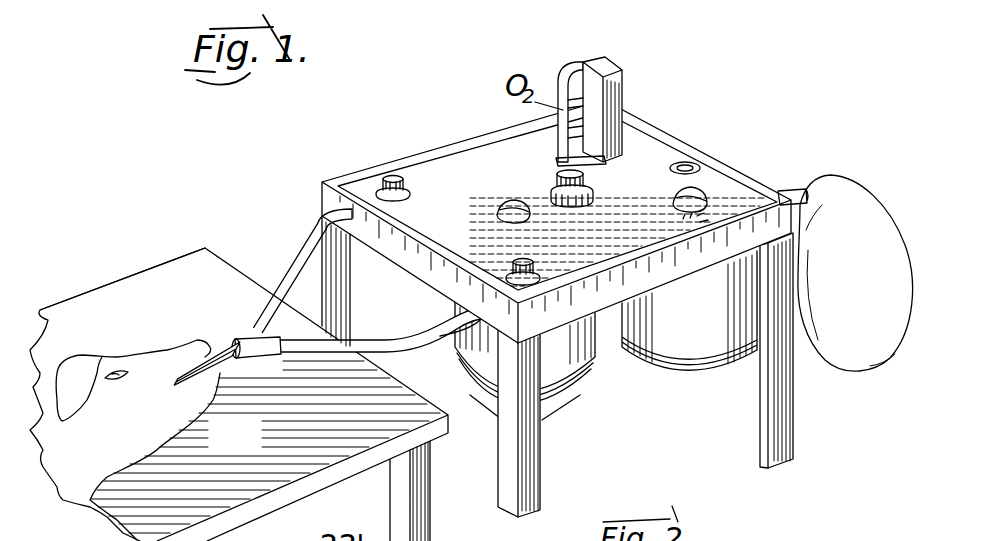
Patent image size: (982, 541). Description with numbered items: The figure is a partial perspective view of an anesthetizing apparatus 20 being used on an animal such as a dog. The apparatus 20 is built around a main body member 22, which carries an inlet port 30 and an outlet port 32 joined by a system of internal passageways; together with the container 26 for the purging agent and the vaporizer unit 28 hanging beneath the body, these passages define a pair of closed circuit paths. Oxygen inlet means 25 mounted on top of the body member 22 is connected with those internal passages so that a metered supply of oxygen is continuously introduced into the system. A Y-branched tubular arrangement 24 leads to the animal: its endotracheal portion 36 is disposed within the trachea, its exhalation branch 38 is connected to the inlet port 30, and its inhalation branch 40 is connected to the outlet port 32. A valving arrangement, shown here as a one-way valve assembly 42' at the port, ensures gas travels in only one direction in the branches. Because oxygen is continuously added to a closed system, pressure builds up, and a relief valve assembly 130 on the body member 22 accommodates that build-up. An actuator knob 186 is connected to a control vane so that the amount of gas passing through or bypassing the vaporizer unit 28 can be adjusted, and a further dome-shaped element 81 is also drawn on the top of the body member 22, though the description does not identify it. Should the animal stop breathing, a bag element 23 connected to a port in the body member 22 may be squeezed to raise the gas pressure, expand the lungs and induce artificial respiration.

The anesthetizing apparatus 20 is at (541, 262).
The main body member 22 is at (472, 147).
The bag element 23 is at (857, 210).
The Y-branched tubular arrangement 24 is at (307, 357).
The oxygen inlet means 25 is at (669, 106).
The container for the purging agent 26 is at (573, 368).
The vaporizer unit 28 is at (712, 365).
The inlet port 30 is at (322, 206).
The outlet port 32 is at (457, 305).
The endotracheal portion 36 is at (222, 343).
The exhalation branch 38 is at (300, 255).
The inhalation branch 40 is at (400, 343).
The one-way valve assembly 42' is at (512, 253).
The valve dome 81 is at (497, 210).
The relief valve assembly 130 is at (546, 198).
The actuator knob 186 is at (687, 200).